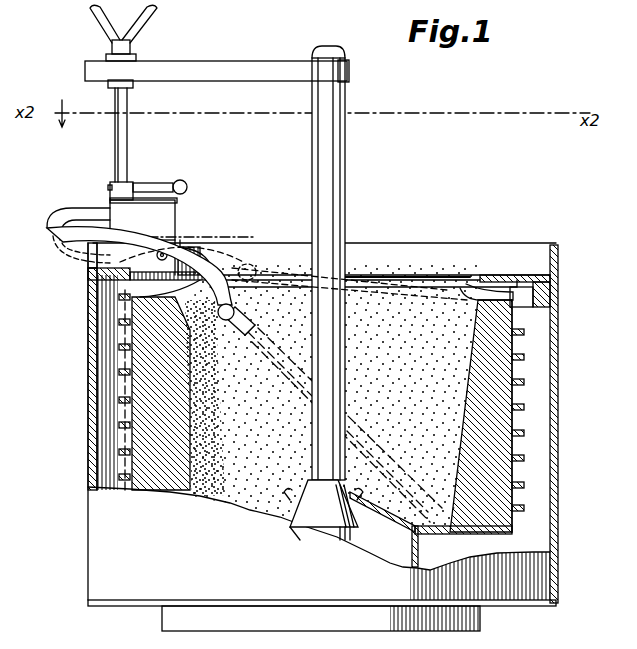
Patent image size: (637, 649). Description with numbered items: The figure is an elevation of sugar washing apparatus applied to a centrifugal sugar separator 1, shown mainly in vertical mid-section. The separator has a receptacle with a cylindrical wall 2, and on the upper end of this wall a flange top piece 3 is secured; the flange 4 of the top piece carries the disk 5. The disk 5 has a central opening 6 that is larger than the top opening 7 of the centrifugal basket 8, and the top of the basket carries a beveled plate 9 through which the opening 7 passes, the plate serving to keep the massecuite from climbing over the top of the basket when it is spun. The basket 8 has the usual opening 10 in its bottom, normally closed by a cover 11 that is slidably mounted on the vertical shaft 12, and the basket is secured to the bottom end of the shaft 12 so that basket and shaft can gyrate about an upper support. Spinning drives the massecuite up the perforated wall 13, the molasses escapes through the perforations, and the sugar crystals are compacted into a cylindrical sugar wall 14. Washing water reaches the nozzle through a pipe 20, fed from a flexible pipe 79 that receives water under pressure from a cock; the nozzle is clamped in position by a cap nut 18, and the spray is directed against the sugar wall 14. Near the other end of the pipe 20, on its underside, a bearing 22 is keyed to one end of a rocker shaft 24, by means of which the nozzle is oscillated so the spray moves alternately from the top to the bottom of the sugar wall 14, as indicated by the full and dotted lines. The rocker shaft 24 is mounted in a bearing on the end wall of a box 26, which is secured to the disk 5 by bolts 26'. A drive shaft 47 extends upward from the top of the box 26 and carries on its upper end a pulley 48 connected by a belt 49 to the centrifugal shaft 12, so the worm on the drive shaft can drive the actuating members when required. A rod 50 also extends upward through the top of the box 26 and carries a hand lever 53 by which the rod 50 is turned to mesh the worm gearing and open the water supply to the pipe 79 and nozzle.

The centrifugal sugar separator 1 is at (573, 211).
The cylindrical wall 2 is at (558, 362).
The flange top piece 3 is at (560, 258).
The flange 4 is at (530, 294).
The disk 5 is at (507, 277).
The central opening 6 is at (423, 275).
The top opening 7 is at (450, 290).
The centrifugal basket 8 is at (522, 415).
The beveled plate 9 is at (472, 287).
The bottom opening 10 is at (417, 550).
The cover 11 is at (396, 522).
The vertical shaft 12 is at (345, 182).
The perforated wall 13 is at (517, 338).
The sugar wall 14 is at (467, 380).
The cap nut 18 is at (233, 302).
The pipe 20 is at (207, 257).
The bearing 22 is at (205, 248).
The rocker shaft 24 is at (168, 243).
The box 26 is at (181, 234).
The bolts 26' is at (73, 260).
The drive shaft 47 is at (127, 147).
The pulley 48 is at (147, 62).
The belt 49 is at (217, 65).
The rod 50 is at (133, 182).
The hand lever 53 is at (168, 183).
The flexible pipe 79 is at (47, 227).